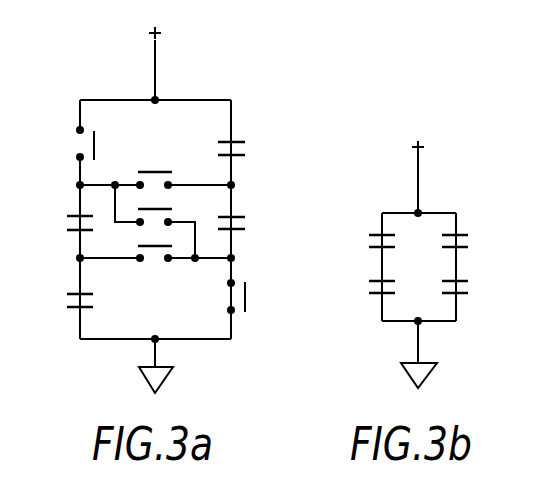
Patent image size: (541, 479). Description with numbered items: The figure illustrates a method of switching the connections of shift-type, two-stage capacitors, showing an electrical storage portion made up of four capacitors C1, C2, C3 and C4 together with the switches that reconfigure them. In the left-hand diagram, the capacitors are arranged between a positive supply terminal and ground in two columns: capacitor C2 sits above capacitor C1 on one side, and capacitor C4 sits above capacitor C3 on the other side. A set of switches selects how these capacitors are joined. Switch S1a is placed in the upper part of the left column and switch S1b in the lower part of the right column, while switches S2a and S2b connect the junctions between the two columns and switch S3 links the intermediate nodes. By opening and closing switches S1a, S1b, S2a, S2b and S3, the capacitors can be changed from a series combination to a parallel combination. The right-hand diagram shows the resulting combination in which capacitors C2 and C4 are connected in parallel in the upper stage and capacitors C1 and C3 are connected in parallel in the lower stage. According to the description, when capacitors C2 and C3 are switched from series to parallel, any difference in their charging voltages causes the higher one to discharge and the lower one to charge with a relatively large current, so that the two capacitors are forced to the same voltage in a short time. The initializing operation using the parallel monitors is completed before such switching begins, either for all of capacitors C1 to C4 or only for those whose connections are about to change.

In FIG. 3A, the switch S1a is at (63, 143).
In FIG. 3A, the switch S2a is at (154, 165).
In FIG. 3A, the switch S3 is at (167, 209).
In FIG. 3A, the switch S2b is at (154, 271).
In FIG. 3A, the switch S1b is at (257, 296).
In FIG. 3A, the capacitor C1 is at (66, 299).
In FIG. 3B, the capacitor C1 is at (369, 290).
In FIG. 3A, the capacitor C2 is at (66, 222).
In FIG. 3B, the capacitor C2 is at (367, 240).
In FIG. 3A, the capacitor C3 is at (245, 223).
In FIG. 3B, the capacitor C3 is at (471, 290).
In FIG. 3A, the capacitor C4 is at (245, 149).
In FIG. 3B, the capacitor C4 is at (471, 240).